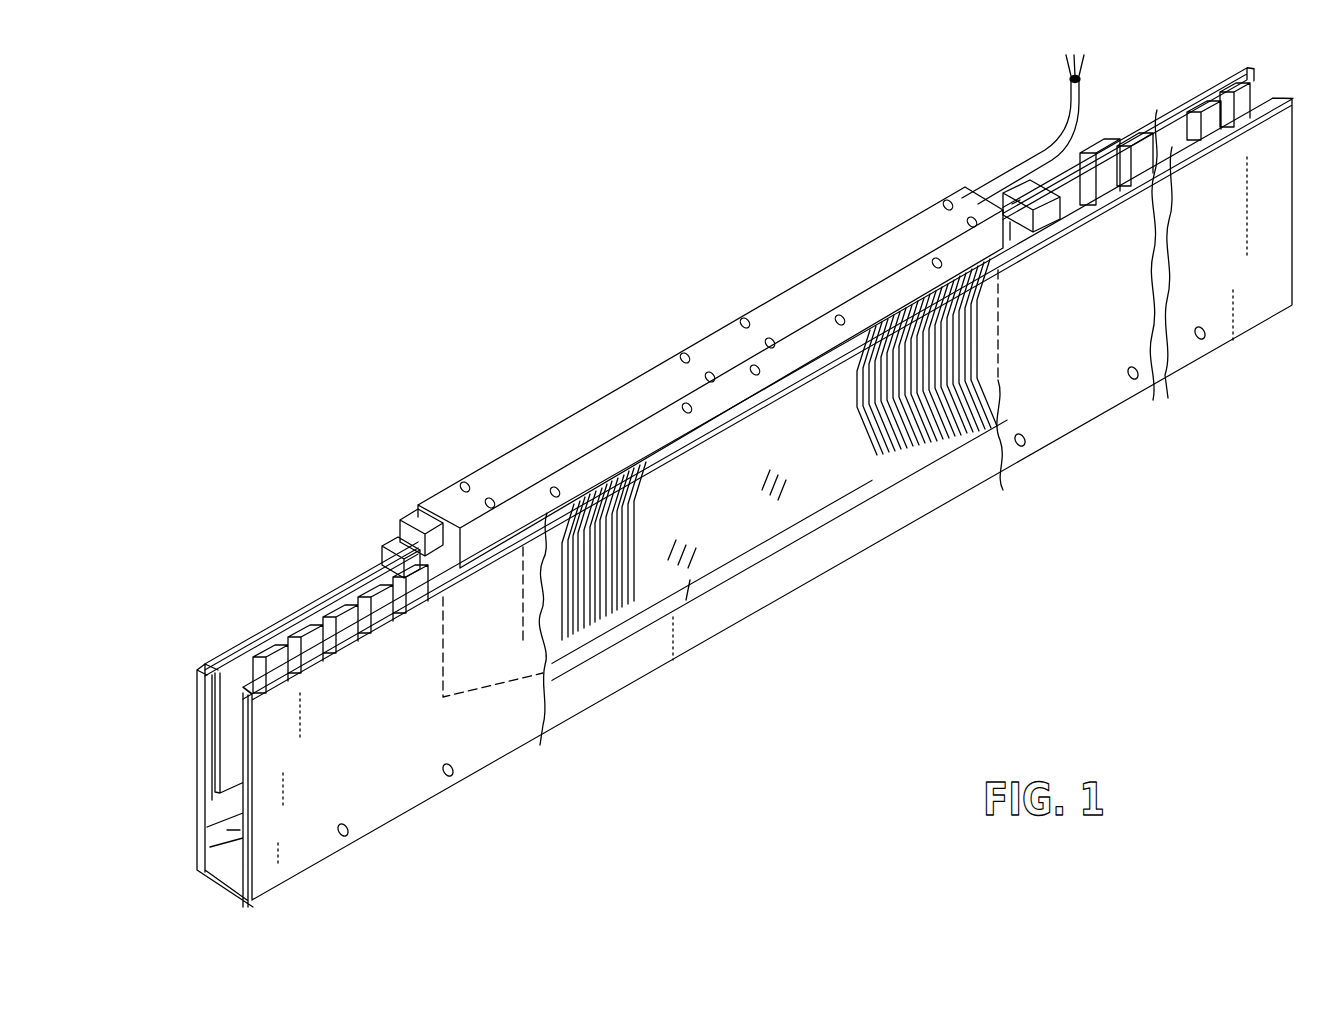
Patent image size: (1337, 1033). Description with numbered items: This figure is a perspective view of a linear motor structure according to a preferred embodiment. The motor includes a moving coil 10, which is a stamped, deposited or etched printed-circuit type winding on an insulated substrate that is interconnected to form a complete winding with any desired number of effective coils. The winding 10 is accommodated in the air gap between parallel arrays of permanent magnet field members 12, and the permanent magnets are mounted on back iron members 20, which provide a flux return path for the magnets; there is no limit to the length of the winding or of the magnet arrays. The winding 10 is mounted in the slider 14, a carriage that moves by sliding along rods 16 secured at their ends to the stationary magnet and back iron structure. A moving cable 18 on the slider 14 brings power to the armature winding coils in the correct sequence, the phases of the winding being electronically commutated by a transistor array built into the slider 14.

The moving coil 10 is at (930, 423).
The permanent magnet field members 12 is at (1210, 100).
The slider 14 is at (532, 460).
The rods 16 is at (1045, 208).
The moving cable 18 is at (1068, 114).
The back iron members 20 is at (222, 662).